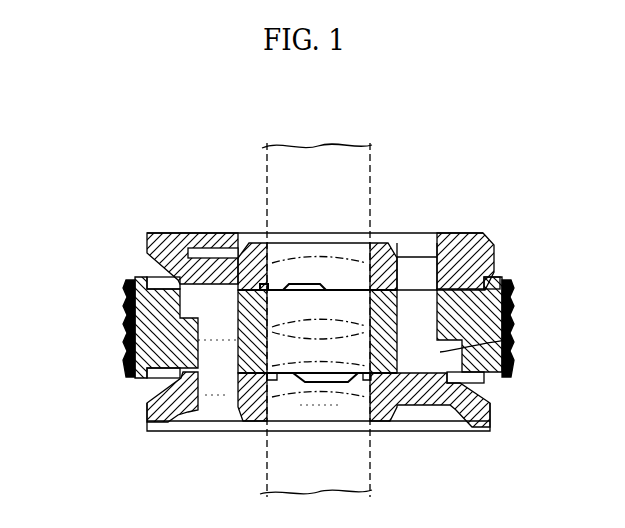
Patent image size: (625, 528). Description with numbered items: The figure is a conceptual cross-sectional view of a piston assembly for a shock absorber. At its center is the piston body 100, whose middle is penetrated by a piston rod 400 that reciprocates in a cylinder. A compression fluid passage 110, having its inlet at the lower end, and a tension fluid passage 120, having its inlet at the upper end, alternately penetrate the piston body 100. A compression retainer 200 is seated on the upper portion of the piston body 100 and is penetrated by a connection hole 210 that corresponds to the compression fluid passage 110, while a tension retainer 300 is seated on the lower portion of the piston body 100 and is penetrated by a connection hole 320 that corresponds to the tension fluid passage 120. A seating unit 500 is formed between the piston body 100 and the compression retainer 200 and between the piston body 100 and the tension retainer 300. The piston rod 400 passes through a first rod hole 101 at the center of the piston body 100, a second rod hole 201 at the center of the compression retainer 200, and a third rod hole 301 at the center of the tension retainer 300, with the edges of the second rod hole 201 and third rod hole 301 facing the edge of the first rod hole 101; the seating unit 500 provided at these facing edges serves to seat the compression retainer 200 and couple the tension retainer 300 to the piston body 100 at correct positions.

The piston body 100 is at (125, 303).
The first rod hole 101 is at (512, 340).
The compression fluid passage 110 is at (517, 316).
The tension fluid passage 120 is at (218, 345).
The compression retainer 200 is at (147, 242).
The second rod hole 201 is at (277, 256).
The connection hole 210 is at (418, 276).
The tension retainer 300 is at (145, 420).
The third rod hole 301 is at (316, 403).
The connection hole 320 is at (216, 398).
The piston rod 400 is at (370, 173).
The seating unit 500 is at (303, 398).